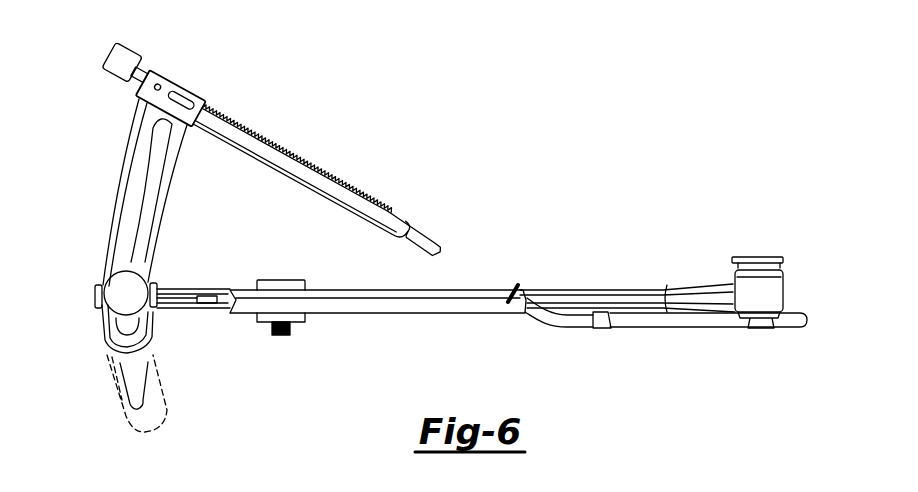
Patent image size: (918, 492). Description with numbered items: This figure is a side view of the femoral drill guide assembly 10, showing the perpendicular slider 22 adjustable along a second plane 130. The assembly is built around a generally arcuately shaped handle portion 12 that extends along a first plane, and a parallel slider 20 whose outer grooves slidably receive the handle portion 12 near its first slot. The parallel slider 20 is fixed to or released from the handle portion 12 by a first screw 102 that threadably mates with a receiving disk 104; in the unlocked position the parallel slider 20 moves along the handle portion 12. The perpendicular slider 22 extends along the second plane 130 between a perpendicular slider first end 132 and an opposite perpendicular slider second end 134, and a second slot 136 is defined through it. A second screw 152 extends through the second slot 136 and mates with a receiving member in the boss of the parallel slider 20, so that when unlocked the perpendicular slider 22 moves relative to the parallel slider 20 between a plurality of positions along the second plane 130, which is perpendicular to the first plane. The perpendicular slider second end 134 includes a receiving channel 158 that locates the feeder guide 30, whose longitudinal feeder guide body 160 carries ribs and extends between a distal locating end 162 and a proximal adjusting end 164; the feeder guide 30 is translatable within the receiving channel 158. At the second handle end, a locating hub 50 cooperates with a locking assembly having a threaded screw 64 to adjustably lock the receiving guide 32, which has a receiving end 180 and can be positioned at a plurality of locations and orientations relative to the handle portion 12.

The femoral drill guide assembly 10 is at (553, 185).
The handle portion 12 is at (393, 305).
The parallel slider 20 is at (197, 313).
The perpendicular slider 22 is at (113, 200).
The feeder guide 30 is at (308, 177).
The receiving guide 32 is at (663, 327).
The locating hub 50 is at (773, 287).
The threaded screw 64 is at (757, 258).
The first screw 102 is at (272, 280).
The receiving disk 104 is at (297, 322).
The second plane 130 is at (152, 387).
The perpendicular slider first end 132 is at (104, 340).
The perpendicular slider second end 134 is at (151, 73).
The second slot 136 is at (157, 185).
The second screw 152 is at (120, 287).
The receiving channel 158 is at (168, 86).
The longitudinal feeder guide body 160 is at (261, 146).
The distal locating end 162 is at (420, 237).
The proximal adjusting end 164 is at (112, 63).
The receiving end 180 is at (513, 287).